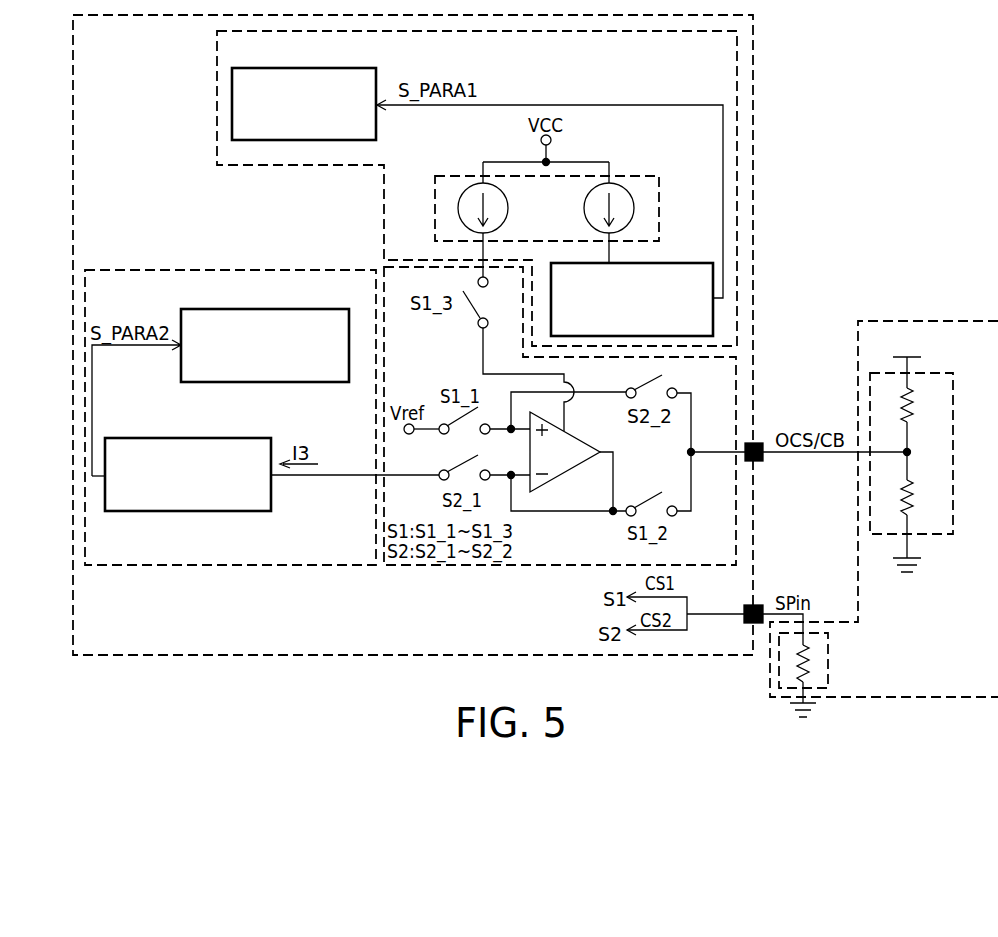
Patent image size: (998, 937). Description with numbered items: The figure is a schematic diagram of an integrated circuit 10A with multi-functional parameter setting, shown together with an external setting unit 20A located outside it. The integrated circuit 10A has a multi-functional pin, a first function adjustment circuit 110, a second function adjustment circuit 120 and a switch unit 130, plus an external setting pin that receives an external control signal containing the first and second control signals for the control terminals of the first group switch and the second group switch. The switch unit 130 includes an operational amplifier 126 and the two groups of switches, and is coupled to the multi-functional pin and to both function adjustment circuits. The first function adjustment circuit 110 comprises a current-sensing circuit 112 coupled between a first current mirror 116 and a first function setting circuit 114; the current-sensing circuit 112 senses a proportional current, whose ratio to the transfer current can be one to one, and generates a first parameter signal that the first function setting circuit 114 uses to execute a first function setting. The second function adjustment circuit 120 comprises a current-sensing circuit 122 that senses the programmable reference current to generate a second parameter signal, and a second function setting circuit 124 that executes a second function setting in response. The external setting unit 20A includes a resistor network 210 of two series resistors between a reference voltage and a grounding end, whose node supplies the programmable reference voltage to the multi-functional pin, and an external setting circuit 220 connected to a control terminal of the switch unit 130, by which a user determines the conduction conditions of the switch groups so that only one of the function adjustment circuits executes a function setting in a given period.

The integrated circuit 10A is at (757, 70).
The first function adjustment circuit 110 is at (217, 127).
The current-sensing circuit 112 is at (650, 263).
The first function setting circuit 114 is at (313, 68).
The first current mirror 116 is at (635, 176).
The second function adjustment circuit 120 is at (315, 268).
The current-sensing circuit 122 is at (170, 438).
The second function setting circuit 124 is at (312, 308).
The operational amplifier 126 is at (573, 430).
The switch unit 130 is at (737, 383).
The external setting unit 20A is at (946, 318).
The resistor network 210 is at (953, 395).
The external setting circuit 220 is at (828, 660).